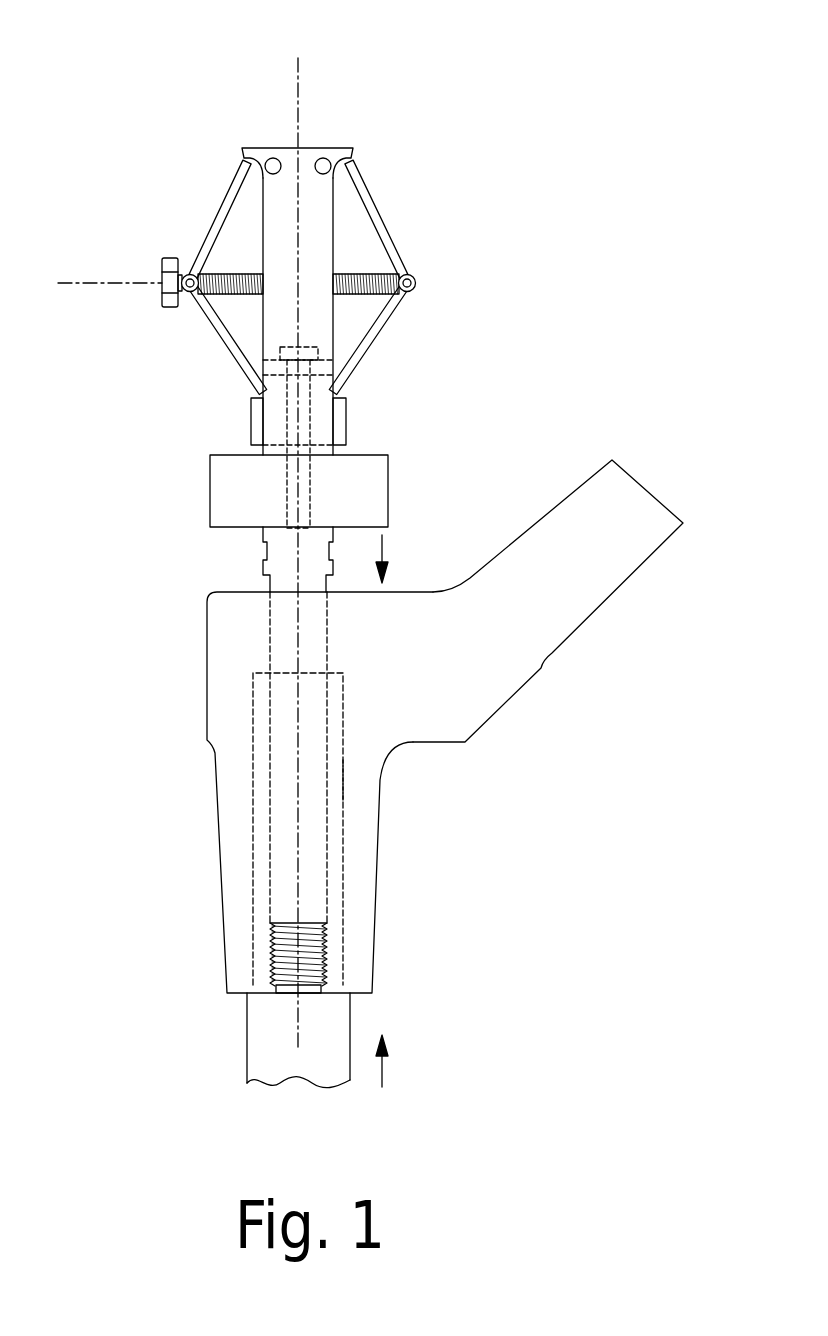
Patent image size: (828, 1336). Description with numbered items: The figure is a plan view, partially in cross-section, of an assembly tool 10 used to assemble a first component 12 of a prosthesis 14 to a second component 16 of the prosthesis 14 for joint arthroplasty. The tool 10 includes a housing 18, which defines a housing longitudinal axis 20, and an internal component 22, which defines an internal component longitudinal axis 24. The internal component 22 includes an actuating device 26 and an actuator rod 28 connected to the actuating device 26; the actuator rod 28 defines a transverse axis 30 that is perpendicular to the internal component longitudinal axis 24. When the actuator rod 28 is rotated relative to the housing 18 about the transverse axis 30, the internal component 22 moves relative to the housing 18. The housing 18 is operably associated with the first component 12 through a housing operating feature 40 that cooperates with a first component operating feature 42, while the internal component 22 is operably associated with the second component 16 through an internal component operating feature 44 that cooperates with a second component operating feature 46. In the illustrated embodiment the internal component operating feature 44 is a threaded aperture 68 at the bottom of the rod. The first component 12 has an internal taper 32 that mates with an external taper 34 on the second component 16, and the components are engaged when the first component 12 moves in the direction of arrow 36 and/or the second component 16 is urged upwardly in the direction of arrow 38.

The assembly tool 10 is at (520, 90).
The first component 12 is at (640, 568).
The prosthesis 14 is at (498, 883).
The second component 16 is at (350, 1020).
The housing 18 is at (335, 152).
The housing longitudinal axis 20 is at (298, 72).
The internal component 22 is at (403, 233).
The internal component longitudinal axis 24 is at (300, 845).
The actuating device 26 is at (400, 305).
The actuator rod 28 is at (318, 350).
The transverse axis 30 is at (88, 282).
The internal taper 32 is at (253, 725).
The external taper 34 is at (343, 787).
The arrow 36 is at (383, 538).
The arrow 38 is at (382, 1070).
The housing operating feature 40 is at (262, 448).
The first component operating feature 42 is at (212, 455).
The internal component operating feature 44 is at (327, 933).
The second component operating feature 46 is at (323, 990).
The threaded aperture 68 is at (330, 955).